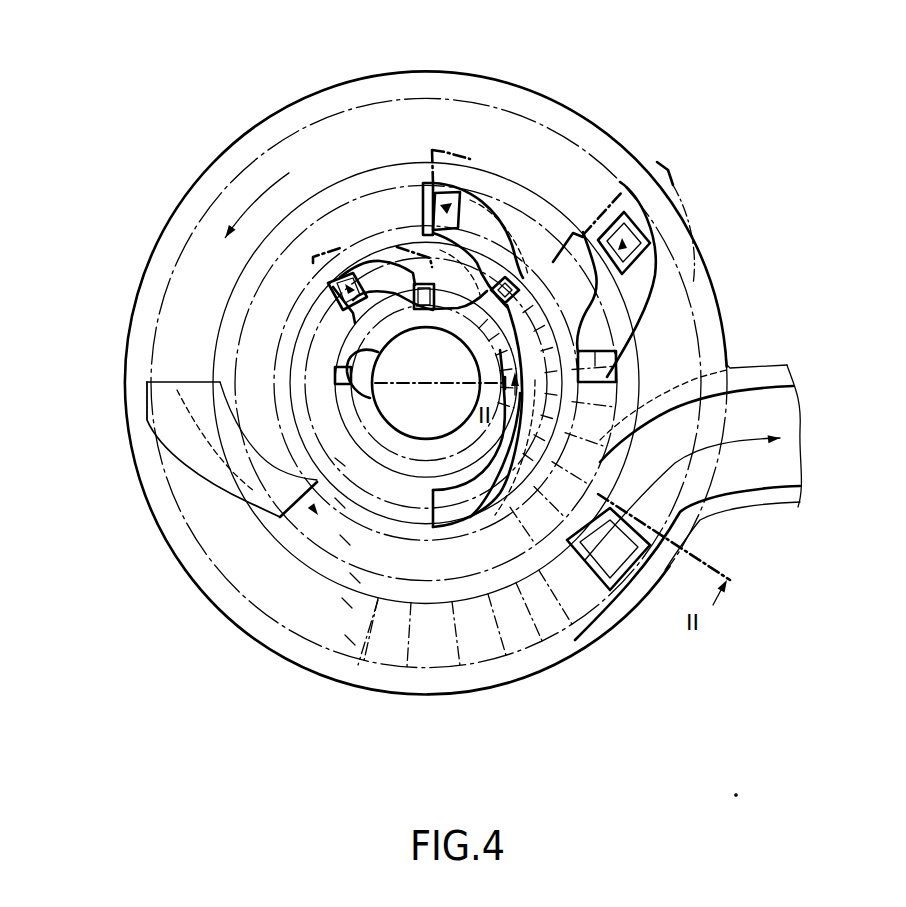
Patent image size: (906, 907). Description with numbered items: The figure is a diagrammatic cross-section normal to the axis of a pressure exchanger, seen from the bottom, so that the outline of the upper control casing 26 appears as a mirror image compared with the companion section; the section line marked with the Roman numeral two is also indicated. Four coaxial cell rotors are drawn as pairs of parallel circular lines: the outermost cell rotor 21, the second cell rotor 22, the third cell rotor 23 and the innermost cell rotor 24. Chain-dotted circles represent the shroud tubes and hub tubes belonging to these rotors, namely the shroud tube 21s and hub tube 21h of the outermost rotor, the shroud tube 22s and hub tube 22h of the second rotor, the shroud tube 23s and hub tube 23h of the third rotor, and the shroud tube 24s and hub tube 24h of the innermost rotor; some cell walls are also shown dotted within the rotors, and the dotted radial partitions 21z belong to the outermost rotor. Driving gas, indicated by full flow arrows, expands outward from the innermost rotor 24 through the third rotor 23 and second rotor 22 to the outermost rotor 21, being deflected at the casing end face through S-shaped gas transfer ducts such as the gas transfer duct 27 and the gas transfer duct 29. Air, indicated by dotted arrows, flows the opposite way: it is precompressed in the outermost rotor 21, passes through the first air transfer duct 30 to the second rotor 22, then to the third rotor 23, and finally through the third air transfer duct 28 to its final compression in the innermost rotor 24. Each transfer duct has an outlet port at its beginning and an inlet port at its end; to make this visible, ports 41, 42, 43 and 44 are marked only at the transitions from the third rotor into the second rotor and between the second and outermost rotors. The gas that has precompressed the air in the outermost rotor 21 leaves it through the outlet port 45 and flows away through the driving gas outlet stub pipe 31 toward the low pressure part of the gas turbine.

The cell rotor 21 is at (448, 647).
The hub tube 21h is at (350, 640).
The shroud tube 21s is at (358, 665).
The partition walls of stage 21 21z is at (530, 612).
The cell rotor 22 is at (448, 572).
The hub tube 22h is at (355, 578).
The shroud tube 22s is at (347, 603).
The cell rotor 23 is at (403, 519).
The hub tube 23h is at (340, 503).
The shroud tube 23s is at (345, 540).
The cell rotor 24 is at (410, 477).
The hub tube 24h is at (350, 390).
The shroud tube 24s is at (340, 462).
The upper control casing 26 is at (243, 133).
The gas transfer duct 27 is at (440, 417).
The third air transfer duct 28 is at (378, 267).
The gas transfer duct 29 is at (468, 208).
The first air transfer duct 30 is at (610, 203).
The driving gas outlet stub pipe 31 is at (778, 473).
The port 41 is at (505, 275).
The port 42 is at (433, 183).
The port 43 is at (605, 373).
The port 44 is at (632, 240).
The outlet port 45 is at (617, 550).